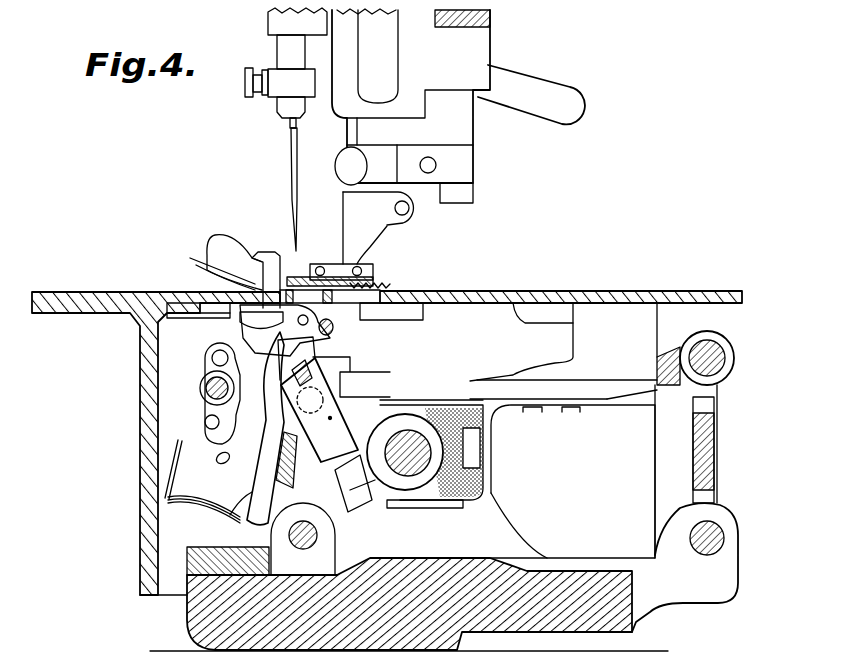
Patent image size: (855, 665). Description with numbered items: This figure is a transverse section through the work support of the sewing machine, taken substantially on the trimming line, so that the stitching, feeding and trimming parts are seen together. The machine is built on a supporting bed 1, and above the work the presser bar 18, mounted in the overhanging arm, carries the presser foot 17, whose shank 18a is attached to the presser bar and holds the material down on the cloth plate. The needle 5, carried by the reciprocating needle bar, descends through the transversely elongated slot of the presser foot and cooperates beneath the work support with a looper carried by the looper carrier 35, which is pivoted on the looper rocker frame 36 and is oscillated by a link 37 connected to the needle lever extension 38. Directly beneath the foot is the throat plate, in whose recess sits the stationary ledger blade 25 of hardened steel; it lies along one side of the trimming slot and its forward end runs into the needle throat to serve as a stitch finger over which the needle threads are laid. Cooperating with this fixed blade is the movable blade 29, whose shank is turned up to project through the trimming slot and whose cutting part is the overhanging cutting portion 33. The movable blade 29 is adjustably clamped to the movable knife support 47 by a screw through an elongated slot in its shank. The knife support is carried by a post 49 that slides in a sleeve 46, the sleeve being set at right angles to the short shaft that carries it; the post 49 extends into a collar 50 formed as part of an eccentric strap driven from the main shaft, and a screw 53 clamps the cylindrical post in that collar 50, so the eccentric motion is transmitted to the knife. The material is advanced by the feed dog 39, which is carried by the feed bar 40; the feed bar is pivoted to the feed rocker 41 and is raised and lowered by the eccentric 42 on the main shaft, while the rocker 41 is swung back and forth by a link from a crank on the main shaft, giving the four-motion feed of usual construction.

The supporting bed 1 is at (516, 594).
The needle 5 is at (288, 148).
The presser foot 17 is at (200, 264).
The presser bar 18 is at (363, 135).
The shank 18a is at (363, 207).
The stationary ledger blade 25 is at (240, 312).
The movable blade 29 is at (313, 264).
The overhanging cutting portion 33 is at (245, 266).
The looper carrier 35 is at (206, 419).
The looper rocker frame 36 is at (224, 435).
The link 37 is at (200, 388).
The needle lever extension 38 is at (250, 342).
The feed dog 39 is at (383, 300).
The feed bar 40 is at (593, 385).
The feed rocker 41 is at (698, 436).
The eccentric 42 is at (410, 418).
The sleeve 46 is at (345, 410).
The movable knife support 47 is at (208, 358).
The post 49 is at (388, 410).
The collar 50 is at (270, 487).
The screw 53 is at (363, 510).